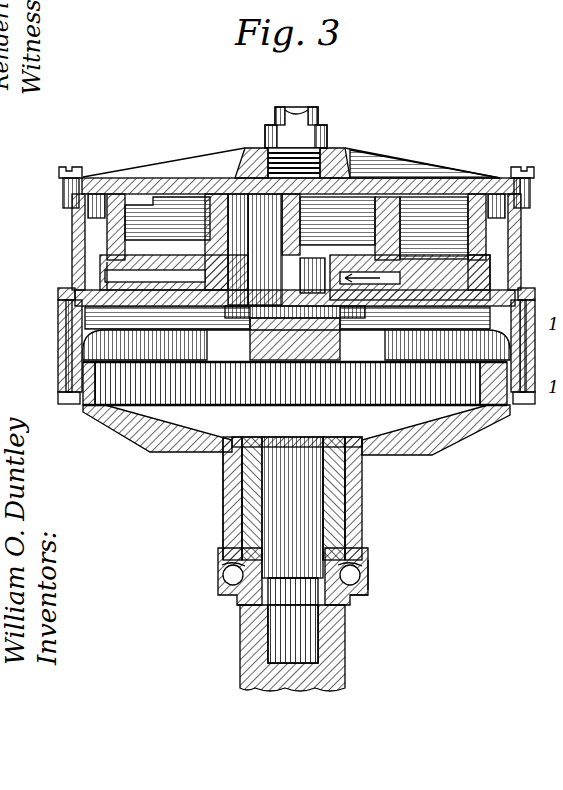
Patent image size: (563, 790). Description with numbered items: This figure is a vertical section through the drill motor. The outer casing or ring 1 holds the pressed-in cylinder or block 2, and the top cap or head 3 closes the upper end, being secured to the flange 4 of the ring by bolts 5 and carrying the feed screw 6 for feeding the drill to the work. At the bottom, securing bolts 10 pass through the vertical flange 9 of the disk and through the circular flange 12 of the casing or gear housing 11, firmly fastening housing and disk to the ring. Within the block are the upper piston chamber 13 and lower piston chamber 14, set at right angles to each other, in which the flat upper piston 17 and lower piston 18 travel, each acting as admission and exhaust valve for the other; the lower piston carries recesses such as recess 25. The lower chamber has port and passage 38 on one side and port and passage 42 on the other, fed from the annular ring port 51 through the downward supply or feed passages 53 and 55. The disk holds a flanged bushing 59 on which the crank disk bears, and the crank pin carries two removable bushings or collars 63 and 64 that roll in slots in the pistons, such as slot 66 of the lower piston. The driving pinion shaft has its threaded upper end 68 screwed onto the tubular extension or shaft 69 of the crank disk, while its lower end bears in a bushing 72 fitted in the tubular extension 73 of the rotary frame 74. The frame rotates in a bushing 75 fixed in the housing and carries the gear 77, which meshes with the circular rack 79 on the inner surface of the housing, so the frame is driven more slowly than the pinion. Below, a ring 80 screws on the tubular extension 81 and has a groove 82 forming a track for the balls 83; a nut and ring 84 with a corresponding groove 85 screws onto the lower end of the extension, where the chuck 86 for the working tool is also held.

The outer casing or ring 1 is at (74, 230).
The cylinder or block 2 is at (107, 266).
The top cap or head 3 is at (140, 184).
The flange 4 is at (62, 203).
The bolts 5 is at (80, 170).
The feed screw 6 is at (316, 127).
The vertical flange 9 is at (58, 350).
The securing bolts 10 is at (66, 336).
The casing or gear housing 11 is at (450, 436).
The circular flange 12 is at (523, 349).
The upper piston chamber 13 is at (433, 205).
The lower piston chamber 14 is at (58, 293).
The upper piston 17 is at (372, 220).
The lower piston 18 is at (382, 292).
The recess 25 is at (410, 277).
The port and passage 38 is at (507, 285).
The port and passage 42 is at (155, 276).
The ring port 51 is at (100, 196).
The supply or feed port and passage 53 is at (493, 245).
The supply or feed port and passage 55 is at (108, 241).
The flanged bushing 59 is at (252, 346).
The bushing or collar 63 is at (218, 195).
The bushing or collar 64 is at (262, 273).
The slot 66 is at (340, 291).
The upper end of pinion shaft 68 is at (295, 333).
The tubular extension or shaft 69 is at (340, 347).
The bushing 72 is at (232, 548).
The tubular extension 73 is at (348, 500).
The rotary frame 74 is at (280, 423).
The bushing 75 is at (247, 528).
The gear 77 is at (363, 407).
The circular rack 79 is at (495, 392).
The ring 80 is at (364, 552).
The tubular extension 81 is at (340, 522).
The groove 82 is at (368, 575).
The balls 83 is at (362, 590).
The nut and ring 84 is at (352, 607).
The groove 85 is at (367, 591).
The chuck 86 is at (348, 670).